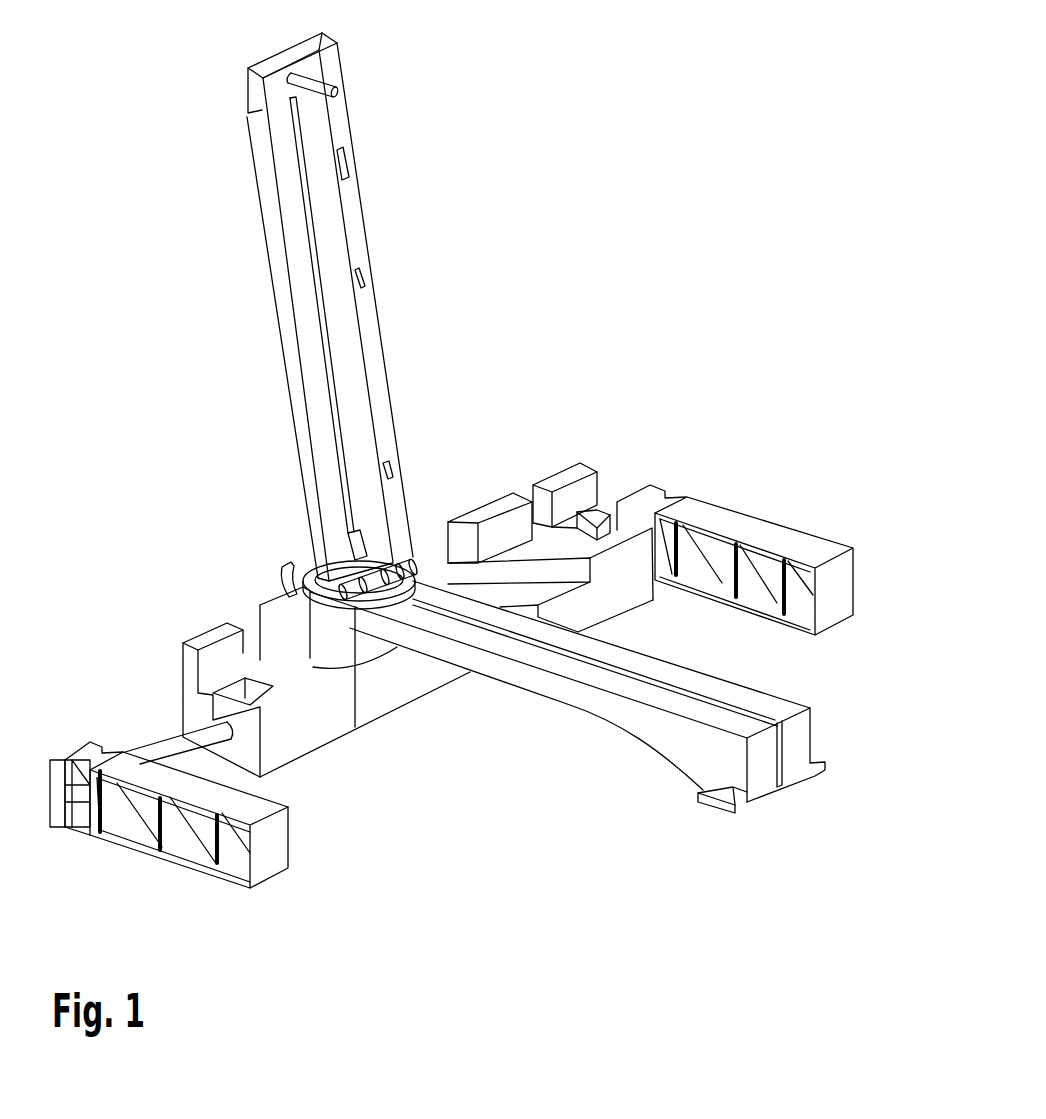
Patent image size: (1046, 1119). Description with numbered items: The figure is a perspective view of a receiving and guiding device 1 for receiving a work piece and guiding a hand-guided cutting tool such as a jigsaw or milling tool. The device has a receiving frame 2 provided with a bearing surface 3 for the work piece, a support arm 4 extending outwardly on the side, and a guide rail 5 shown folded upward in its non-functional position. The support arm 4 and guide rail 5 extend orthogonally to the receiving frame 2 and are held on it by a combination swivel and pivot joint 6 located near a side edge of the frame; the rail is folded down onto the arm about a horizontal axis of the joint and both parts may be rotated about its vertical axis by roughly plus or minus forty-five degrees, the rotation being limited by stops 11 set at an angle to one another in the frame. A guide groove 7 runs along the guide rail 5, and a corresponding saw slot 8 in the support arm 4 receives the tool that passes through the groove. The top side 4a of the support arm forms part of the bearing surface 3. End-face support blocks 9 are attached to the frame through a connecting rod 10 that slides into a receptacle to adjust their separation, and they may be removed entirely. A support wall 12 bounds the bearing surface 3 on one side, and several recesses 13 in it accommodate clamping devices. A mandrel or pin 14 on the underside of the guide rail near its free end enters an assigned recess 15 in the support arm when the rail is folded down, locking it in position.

The receiving and guiding device 1 is at (178, 272).
The receiving frame 2 is at (305, 738).
The bearing surface 3 is at (562, 540).
The support arm 4 is at (584, 697).
The top side of the support arm 4a is at (500, 650).
The guide rail 5 is at (355, 213).
The swivel and pivot joint 6 is at (300, 562).
The guide groove 7 is at (303, 133).
The saw slot 8 is at (663, 688).
The end-face support blocks 9 is at (275, 855).
The connecting rod 10 is at (172, 748).
The stops 11 is at (540, 570).
The support wall 12 is at (497, 510).
The recesses 13 is at (520, 480).
The mandrel or pin 14 is at (329, 88).
The recess 15 is at (784, 716).